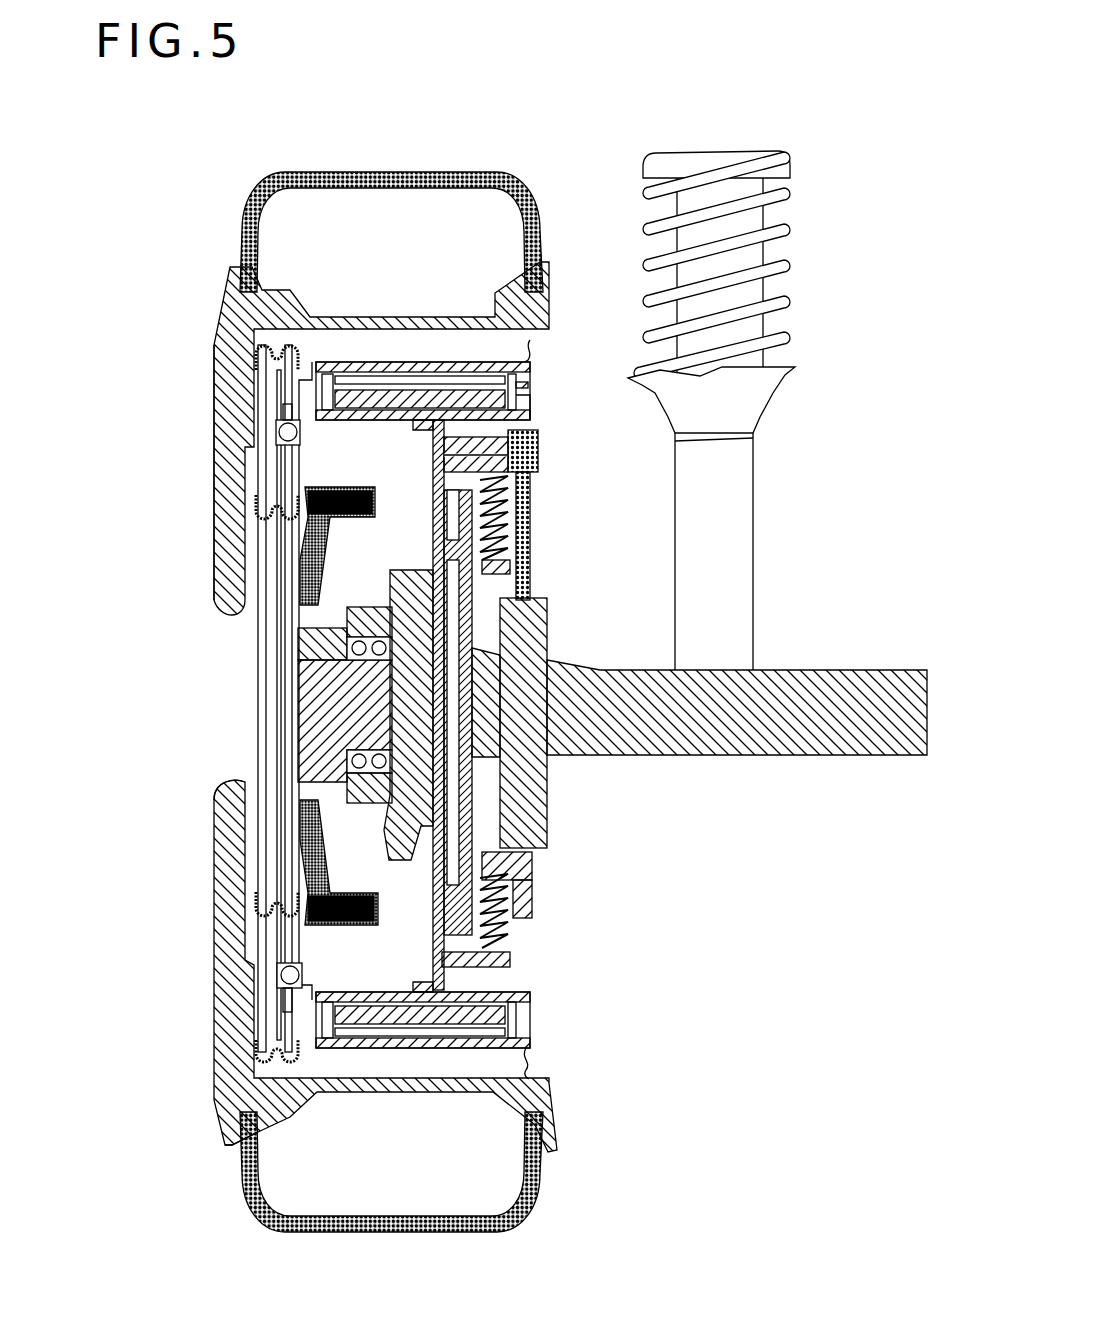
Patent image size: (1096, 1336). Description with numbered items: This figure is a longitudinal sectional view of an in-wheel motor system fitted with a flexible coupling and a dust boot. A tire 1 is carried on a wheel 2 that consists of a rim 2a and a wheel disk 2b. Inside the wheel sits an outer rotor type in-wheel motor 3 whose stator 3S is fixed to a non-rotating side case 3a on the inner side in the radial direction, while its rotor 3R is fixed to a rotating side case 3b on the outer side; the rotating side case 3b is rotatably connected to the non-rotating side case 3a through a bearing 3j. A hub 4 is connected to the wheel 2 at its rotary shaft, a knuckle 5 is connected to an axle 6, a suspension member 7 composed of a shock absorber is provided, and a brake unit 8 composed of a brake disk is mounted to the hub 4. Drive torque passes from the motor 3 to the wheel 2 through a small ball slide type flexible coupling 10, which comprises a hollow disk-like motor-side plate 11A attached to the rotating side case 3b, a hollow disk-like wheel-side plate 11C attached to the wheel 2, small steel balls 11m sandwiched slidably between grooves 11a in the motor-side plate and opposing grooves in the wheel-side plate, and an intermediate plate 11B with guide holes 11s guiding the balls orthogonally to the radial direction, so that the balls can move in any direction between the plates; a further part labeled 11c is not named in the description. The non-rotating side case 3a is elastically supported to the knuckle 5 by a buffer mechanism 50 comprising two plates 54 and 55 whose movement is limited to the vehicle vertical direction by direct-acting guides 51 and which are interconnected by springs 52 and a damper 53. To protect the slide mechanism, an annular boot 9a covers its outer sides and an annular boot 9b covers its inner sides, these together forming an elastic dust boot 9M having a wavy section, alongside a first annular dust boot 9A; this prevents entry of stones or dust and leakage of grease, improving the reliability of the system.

The tire 1 is at (468, 170).
The wheel 2 is at (319, 658).
The rim 2a is at (238, 266).
The wheel disk 2b is at (242, 585).
The outer rotor type in-wheel motor 3 is at (472, 629).
The stator 3S is at (400, 410).
The rotor 3R is at (435, 378).
The non-rotating side case 3a is at (527, 413).
The rotating side case 3b is at (525, 360).
The bearing 3j is at (530, 387).
The hub 4 is at (346, 705).
The knuckle 5 is at (420, 828).
The axle 6 is at (812, 672).
The suspension member 7 is at (780, 335).
The brake unit 8 is at (320, 903).
The elastic dust boot 9M is at (352, 696).
The first annular dust boot 9A is at (525, 1062).
The annular boot 9a is at (273, 1052).
The annular boot 9b is at (258, 905).
The flexible coupling 10 is at (243, 341).
The motor-side plate 11A is at (293, 710).
The intermediate plate 11B is at (268, 510).
The wheel-side plate 11C is at (262, 368).
The grooves 11a is at (272, 992).
The piston 11c is at (265, 968).
The small steel balls 11m is at (273, 432).
The guide holes 11s is at (272, 985).
The buffer mechanism 50 is at (518, 707).
The direct-acting guides 51 is at (433, 495).
The springs 52 is at (510, 542).
The damper 53 is at (547, 640).
The plate 54 is at (434, 530).
The plate 55 is at (432, 558).